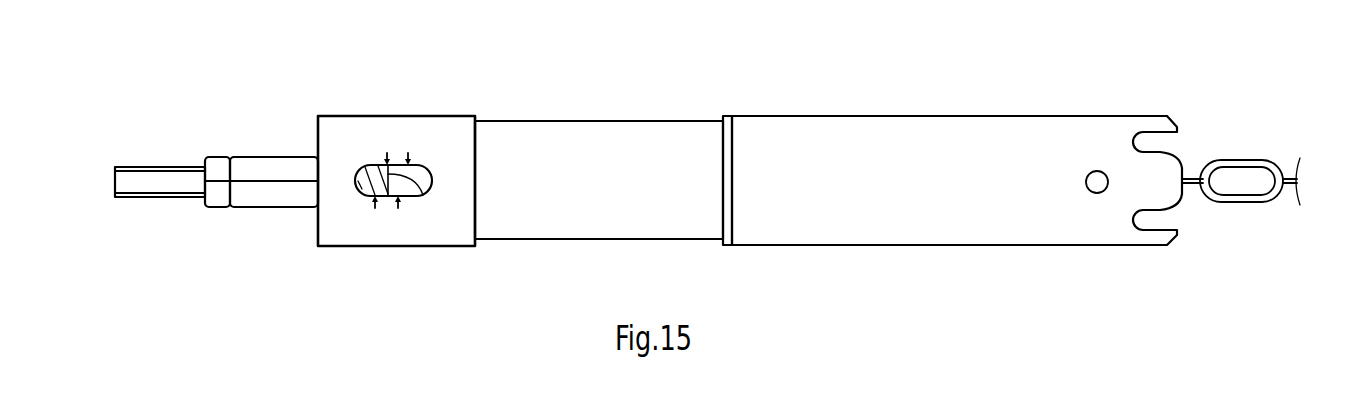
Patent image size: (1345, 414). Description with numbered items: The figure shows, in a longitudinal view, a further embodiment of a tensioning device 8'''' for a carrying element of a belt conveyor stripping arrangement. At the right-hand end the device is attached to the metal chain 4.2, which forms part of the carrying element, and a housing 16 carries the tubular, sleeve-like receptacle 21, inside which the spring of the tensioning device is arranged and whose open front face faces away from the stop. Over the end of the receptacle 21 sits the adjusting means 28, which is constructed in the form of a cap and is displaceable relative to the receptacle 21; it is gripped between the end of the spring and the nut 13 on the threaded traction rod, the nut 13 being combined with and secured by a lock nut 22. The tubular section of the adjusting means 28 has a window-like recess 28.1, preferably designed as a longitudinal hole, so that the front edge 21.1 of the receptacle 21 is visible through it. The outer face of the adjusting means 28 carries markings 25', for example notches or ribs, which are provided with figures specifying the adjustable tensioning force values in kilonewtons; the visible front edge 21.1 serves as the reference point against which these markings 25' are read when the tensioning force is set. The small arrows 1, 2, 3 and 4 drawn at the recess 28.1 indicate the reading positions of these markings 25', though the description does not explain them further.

The tensioning device 8'''' is at (707, 155).
The lock nut 22 is at (215, 162).
The nut 13 is at (262, 162).
The adjusting means 28 is at (343, 132).
The markings 25' is at (393, 185).
The window-like recess 28.1 is at (357, 193).
The front edge 21.1 is at (423, 195).
The receptacle 21 is at (635, 132).
The housing 16 is at (1068, 130).
The metal chain 4.2 is at (1250, 163).
The direction arrow 1 is at (409, 152).
The direction arrow 2 is at (398, 211).
The direction arrow 3 is at (386, 152).
The direction arrow 4 is at (374, 211).